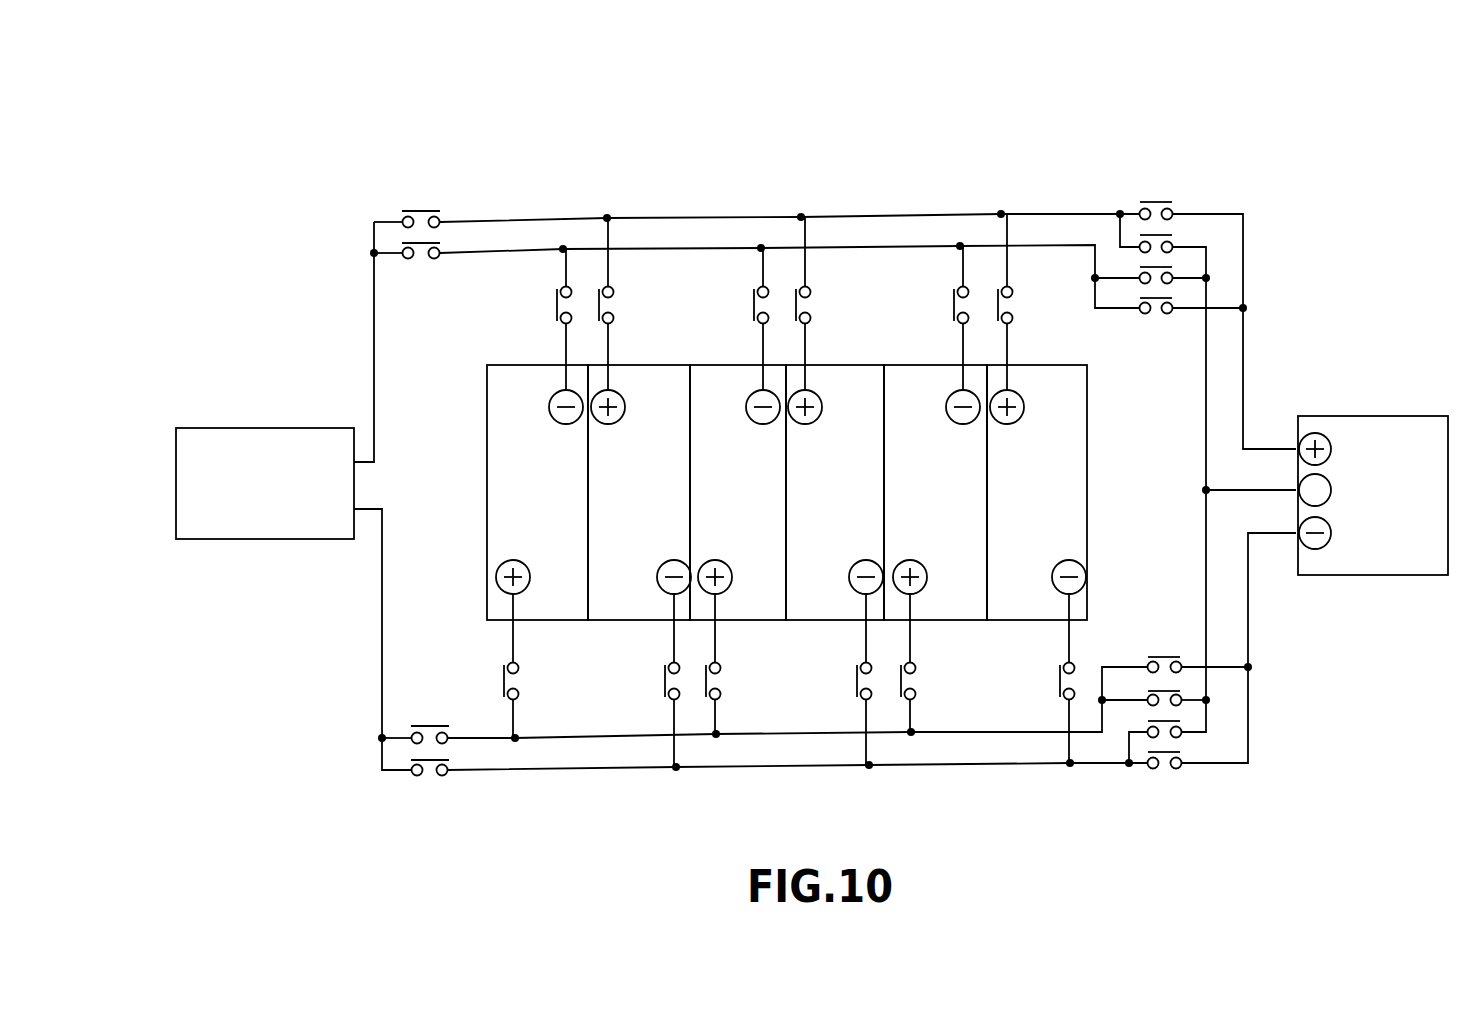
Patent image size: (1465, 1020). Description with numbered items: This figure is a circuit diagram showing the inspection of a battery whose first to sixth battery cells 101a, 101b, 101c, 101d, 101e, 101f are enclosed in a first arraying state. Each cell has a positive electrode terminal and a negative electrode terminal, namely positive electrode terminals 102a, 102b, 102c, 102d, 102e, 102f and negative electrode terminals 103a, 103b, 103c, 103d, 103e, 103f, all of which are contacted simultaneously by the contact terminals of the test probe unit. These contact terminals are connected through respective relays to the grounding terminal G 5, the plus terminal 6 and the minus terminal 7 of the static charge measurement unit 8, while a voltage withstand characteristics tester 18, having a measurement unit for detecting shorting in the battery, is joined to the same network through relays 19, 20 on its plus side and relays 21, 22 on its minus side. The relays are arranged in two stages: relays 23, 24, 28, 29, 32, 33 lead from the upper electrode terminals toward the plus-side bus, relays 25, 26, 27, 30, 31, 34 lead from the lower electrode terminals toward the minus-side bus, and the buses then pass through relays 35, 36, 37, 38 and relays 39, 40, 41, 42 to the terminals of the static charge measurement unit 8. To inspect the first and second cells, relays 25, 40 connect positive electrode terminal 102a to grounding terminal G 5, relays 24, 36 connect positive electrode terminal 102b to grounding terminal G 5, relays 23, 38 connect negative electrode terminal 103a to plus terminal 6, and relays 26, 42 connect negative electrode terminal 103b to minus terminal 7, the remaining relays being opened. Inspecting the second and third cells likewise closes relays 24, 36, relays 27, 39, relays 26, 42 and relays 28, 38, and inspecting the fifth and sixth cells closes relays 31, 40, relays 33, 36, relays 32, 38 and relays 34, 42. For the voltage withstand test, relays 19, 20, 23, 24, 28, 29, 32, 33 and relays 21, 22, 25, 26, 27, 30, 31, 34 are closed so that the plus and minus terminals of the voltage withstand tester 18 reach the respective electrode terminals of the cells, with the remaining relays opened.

The ground terminal 5 is at (1295, 492).
The positive terminal 6 is at (1297, 440).
The negative terminal 7 is at (1297, 540).
The static charge measurement unit 8 is at (1356, 415).
The voltage withstand characteristics tester 18 is at (272, 427).
The relay 19 is at (416, 204).
The relay 20 is at (418, 263).
The relay 21 is at (432, 720).
The relay 22 is at (432, 782).
The relay 23 is at (548, 304).
The relay 24 is at (620, 300).
The relay 25 is at (532, 686).
The relay 26 is at (652, 688).
The relay 27 is at (730, 683).
The relay 28 is at (750, 306).
The relay 29 is at (816, 300).
The relay 30 is at (848, 682).
The relay 31 is at (924, 682).
The relay 32 is at (946, 301).
The relay 33 is at (1017, 300).
The relay 34 is at (1052, 680).
The switch 35 is at (1151, 196).
The relay 36 is at (1178, 239).
The switch 37 is at (1178, 290).
The relay 38 is at (1156, 318).
The relay 39 is at (1163, 650).
The relay 40 is at (1143, 689).
The switch 41 is at (1190, 741).
The relay 42 is at (1165, 772).
The first battery cell 101a is at (503, 376).
The second battery cell 101b is at (668, 385).
The third battery cell 101c is at (706, 375).
The fourth battery cell 101d is at (865, 380).
The fifth battery cell 101e is at (921, 380).
The sixth battery cell 101f is at (1043, 375).
The positive electrode terminal 102a is at (522, 560).
The positive electrode terminal 102b is at (618, 421).
The positive electrode terminal 102c is at (720, 560).
The positive electrode terminal 102d is at (815, 421).
The positive electrode terminal 102e is at (918, 562).
The positive electrode terminal 102f is at (1012, 423).
The negative electrode terminal 103a is at (556, 421).
The negative electrode terminal 103b is at (660, 560).
The negative electrode terminal 103c is at (753, 421).
The negative electrode terminal 103d is at (856, 563).
The negative electrode terminal 103e is at (952, 420).
The negative electrode terminal 103f is at (1053, 566).